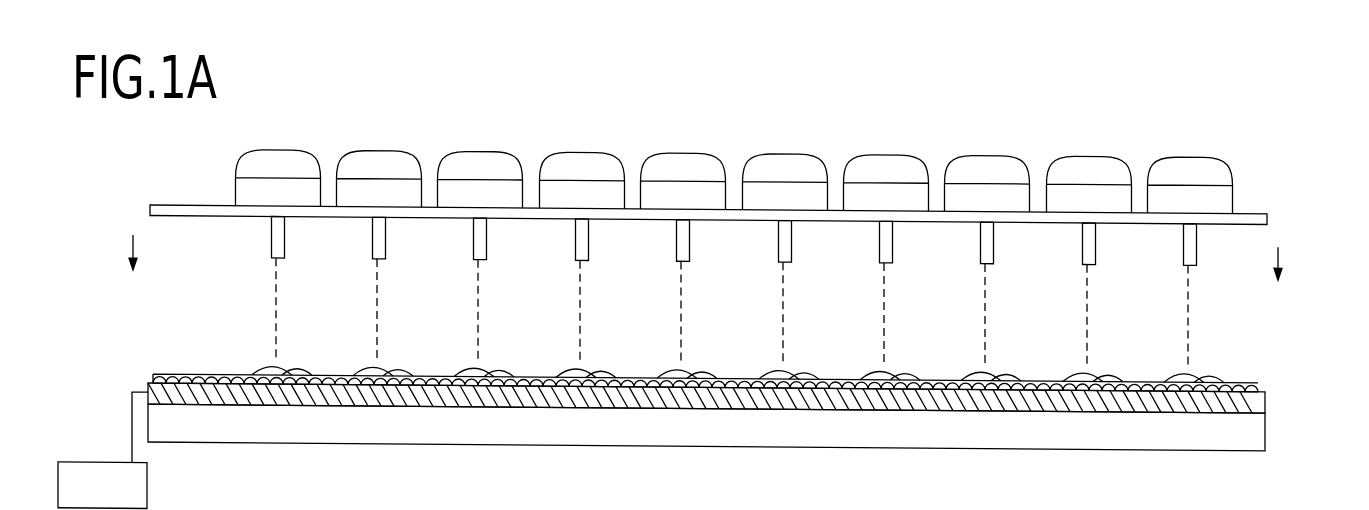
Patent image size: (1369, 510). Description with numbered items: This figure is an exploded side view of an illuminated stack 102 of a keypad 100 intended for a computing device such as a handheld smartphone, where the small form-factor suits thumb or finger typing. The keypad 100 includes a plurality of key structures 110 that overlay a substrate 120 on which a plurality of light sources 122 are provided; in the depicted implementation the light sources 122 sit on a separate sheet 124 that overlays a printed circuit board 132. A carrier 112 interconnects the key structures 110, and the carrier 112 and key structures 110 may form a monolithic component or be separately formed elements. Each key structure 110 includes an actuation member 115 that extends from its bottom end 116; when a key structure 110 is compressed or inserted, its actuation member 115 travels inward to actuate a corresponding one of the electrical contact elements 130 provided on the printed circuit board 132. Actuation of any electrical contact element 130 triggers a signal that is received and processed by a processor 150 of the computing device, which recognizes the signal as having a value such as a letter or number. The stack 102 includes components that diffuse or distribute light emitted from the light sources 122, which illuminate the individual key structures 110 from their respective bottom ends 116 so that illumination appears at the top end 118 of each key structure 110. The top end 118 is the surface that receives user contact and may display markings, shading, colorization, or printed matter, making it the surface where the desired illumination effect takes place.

The keypad 100 is at (1237, 123).
The illuminated stack 102 is at (127, 148).
The key structures 110 is at (785, 137).
The carrier 112 is at (1253, 204).
The actuation member 115 is at (766, 240).
The bottom end 116 is at (767, 313).
The top end 118 is at (1187, 147).
The substrate 120 is at (1230, 463).
The light sources 122 is at (738, 339).
The separate sheet 124 is at (160, 373).
The electrical contact elements 130 is at (714, 436).
The printed circuit board 132 is at (149, 425).
The processor 150 is at (82, 459).